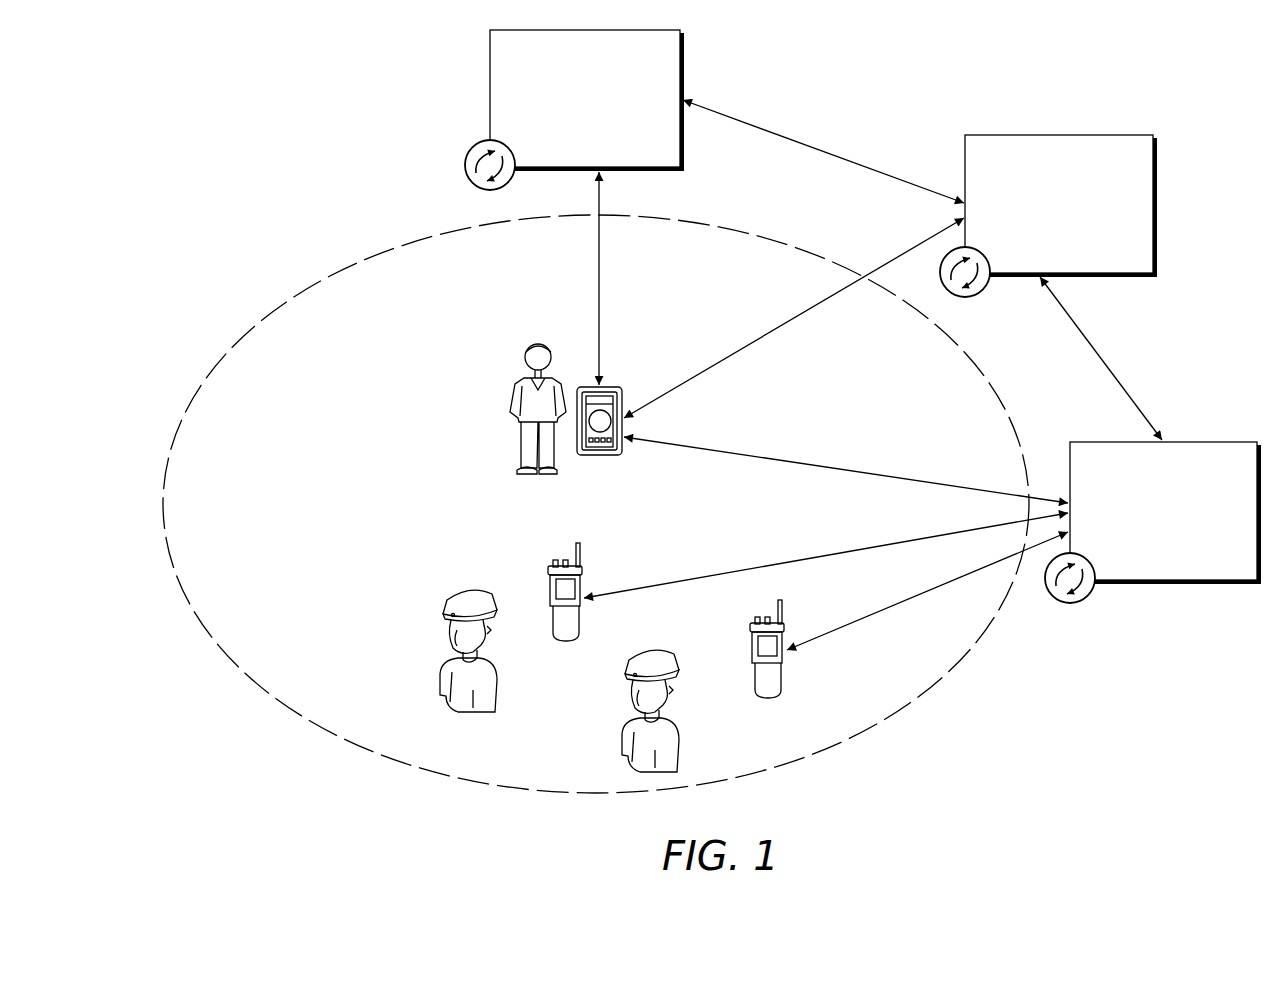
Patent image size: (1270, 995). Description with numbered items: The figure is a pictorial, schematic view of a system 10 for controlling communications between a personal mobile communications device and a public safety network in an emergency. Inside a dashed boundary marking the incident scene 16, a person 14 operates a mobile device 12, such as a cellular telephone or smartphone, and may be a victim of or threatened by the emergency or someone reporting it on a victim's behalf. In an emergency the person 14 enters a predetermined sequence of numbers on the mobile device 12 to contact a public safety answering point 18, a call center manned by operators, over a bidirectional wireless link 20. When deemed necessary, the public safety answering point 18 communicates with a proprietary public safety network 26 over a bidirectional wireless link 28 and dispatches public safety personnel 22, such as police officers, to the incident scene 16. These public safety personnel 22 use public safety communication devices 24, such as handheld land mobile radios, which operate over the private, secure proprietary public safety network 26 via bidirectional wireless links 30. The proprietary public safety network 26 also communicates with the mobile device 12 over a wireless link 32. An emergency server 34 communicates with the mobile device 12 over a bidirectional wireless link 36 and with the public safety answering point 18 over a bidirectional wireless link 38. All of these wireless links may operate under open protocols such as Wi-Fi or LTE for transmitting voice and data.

The system 10 is at (1167, 56).
The mobile device 12 is at (610, 385).
The person 14 is at (510, 404).
The incident scene 16 is at (177, 577).
The public safety answering point 18 is at (1060, 135).
The bidirectional wireless link 20 is at (822, 302).
The public safety personnel 22 is at (497, 686).
The public safety communication devices 24 is at (585, 618).
The proprietary public safety network 26 is at (1180, 582).
The bidirectional wireless link 28 is at (1100, 357).
The bidirectional wireless links 30 is at (786, 562).
The wireless link 32 is at (840, 468).
The emergency server 34 is at (490, 118).
The bidirectional wireless link 36 is at (598, 263).
The bidirectional wireless link 38 is at (823, 148).